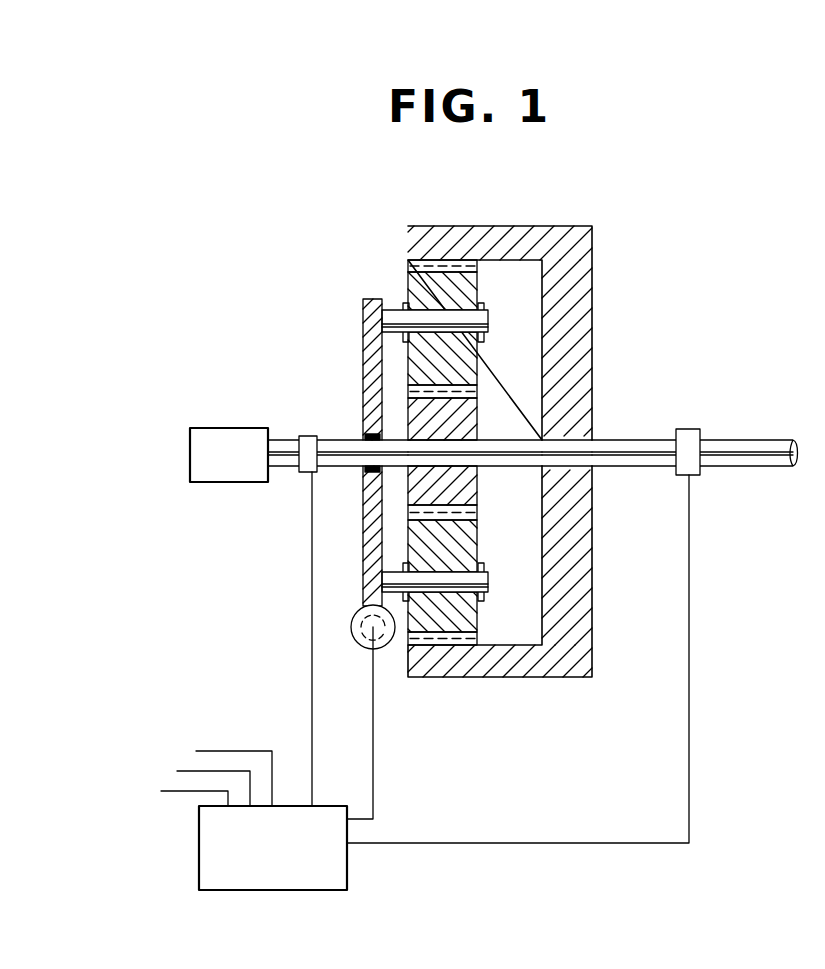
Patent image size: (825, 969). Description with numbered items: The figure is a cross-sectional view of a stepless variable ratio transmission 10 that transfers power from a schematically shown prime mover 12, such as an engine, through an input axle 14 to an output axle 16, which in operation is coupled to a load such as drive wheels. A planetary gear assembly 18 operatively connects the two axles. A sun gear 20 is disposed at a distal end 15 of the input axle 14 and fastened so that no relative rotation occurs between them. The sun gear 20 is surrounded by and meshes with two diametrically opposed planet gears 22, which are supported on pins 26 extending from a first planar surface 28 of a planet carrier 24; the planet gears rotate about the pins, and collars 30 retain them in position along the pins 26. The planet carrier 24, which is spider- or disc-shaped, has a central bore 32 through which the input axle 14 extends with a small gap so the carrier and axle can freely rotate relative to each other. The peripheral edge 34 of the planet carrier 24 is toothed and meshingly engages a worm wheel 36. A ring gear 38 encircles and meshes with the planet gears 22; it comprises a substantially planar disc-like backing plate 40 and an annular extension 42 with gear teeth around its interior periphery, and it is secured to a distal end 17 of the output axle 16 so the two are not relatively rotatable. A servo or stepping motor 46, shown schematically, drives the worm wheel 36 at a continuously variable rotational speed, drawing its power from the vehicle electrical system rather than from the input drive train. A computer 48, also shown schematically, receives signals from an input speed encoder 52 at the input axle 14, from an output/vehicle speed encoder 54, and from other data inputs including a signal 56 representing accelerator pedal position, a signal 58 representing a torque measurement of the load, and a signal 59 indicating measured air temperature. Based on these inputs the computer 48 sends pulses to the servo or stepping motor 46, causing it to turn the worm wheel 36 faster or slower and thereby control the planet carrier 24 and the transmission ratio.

The stepless variable ratio transmission 10 is at (288, 246).
The prime mover 12 is at (242, 467).
The input axle 14 is at (336, 450).
The distal end of input axle 15 is at (468, 450).
The output axle 16 is at (745, 437).
The distal end of output axle 17 is at (573, 448).
The planetary gear assembly 18 is at (495, 214).
The sun gear 20 is at (470, 413).
The planet gears 22 is at (408, 272).
The planet carrier 24 is at (370, 504).
The pins 26 is at (488, 320).
The first planar surface 28 is at (385, 358).
The collars 30 is at (404, 305).
The bore 32 is at (372, 436).
The peripheral edge 34 is at (368, 300).
The worm wheel 36 is at (351, 622).
The ring gear 38 is at (562, 226).
The backing plate 40 is at (592, 272).
The annular extension 42 is at (465, 678).
The servo or stepping motor 46 is at (366, 646).
The computer 48 is at (291, 857).
The input speed encoder 52 is at (308, 474).
The output/vehicle speed encoder 54 is at (700, 476).
The accelerator pedal position signal 56 is at (175, 792).
The torque measurement signal 58 is at (195, 782).
The air temperature signal 59 is at (219, 772).